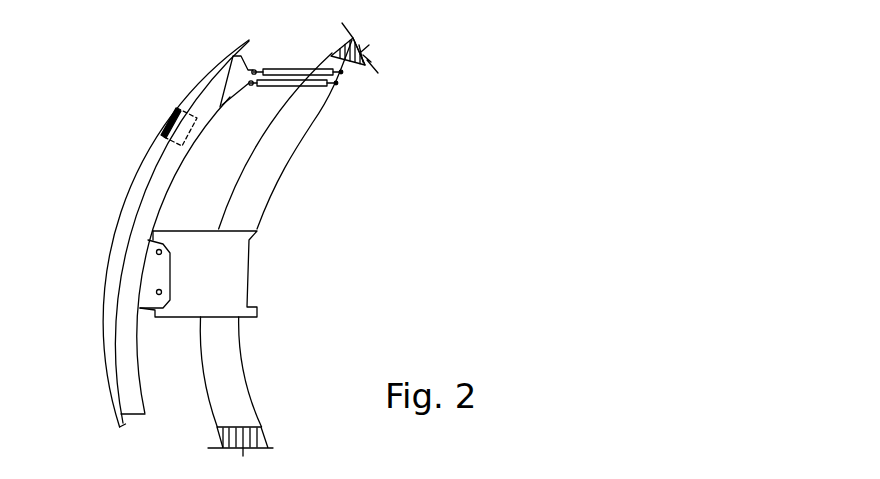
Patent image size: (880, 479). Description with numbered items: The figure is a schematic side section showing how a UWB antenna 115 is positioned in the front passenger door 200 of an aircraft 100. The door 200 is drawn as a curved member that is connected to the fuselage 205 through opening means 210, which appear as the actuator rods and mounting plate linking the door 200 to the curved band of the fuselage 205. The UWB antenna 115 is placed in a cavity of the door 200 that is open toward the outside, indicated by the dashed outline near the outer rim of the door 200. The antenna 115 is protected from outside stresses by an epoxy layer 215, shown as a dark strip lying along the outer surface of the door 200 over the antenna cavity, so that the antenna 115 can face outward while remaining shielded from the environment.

The aircraft 100 is at (470, 69).
The front passenger door 200 is at (108, 262).
The fuselage 205 is at (317, 107).
The opening means 210 is at (281, 68).
The epoxy layer 215 is at (161, 124).
The UWB antenna 115 is at (193, 110).